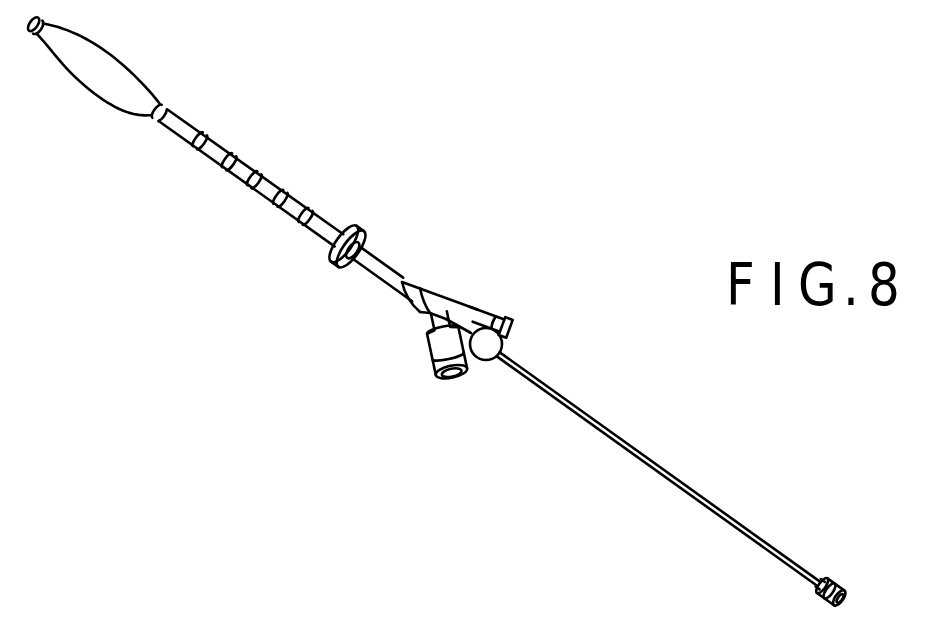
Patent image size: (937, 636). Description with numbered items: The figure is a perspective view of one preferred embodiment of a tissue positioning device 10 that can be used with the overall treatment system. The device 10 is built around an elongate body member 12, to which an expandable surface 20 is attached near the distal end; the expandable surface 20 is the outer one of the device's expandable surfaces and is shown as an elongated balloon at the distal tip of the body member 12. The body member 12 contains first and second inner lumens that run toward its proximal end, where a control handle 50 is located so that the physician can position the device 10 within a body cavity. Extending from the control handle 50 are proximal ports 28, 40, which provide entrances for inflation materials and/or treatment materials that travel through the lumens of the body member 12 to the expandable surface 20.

The device 10 is at (341, 166).
The body member 12 is at (250, 190).
The expandable surface 20 is at (120, 77).
The proximal port 28 is at (517, 323).
The proximal port 40 is at (449, 372).
The control handle 50 is at (480, 273).